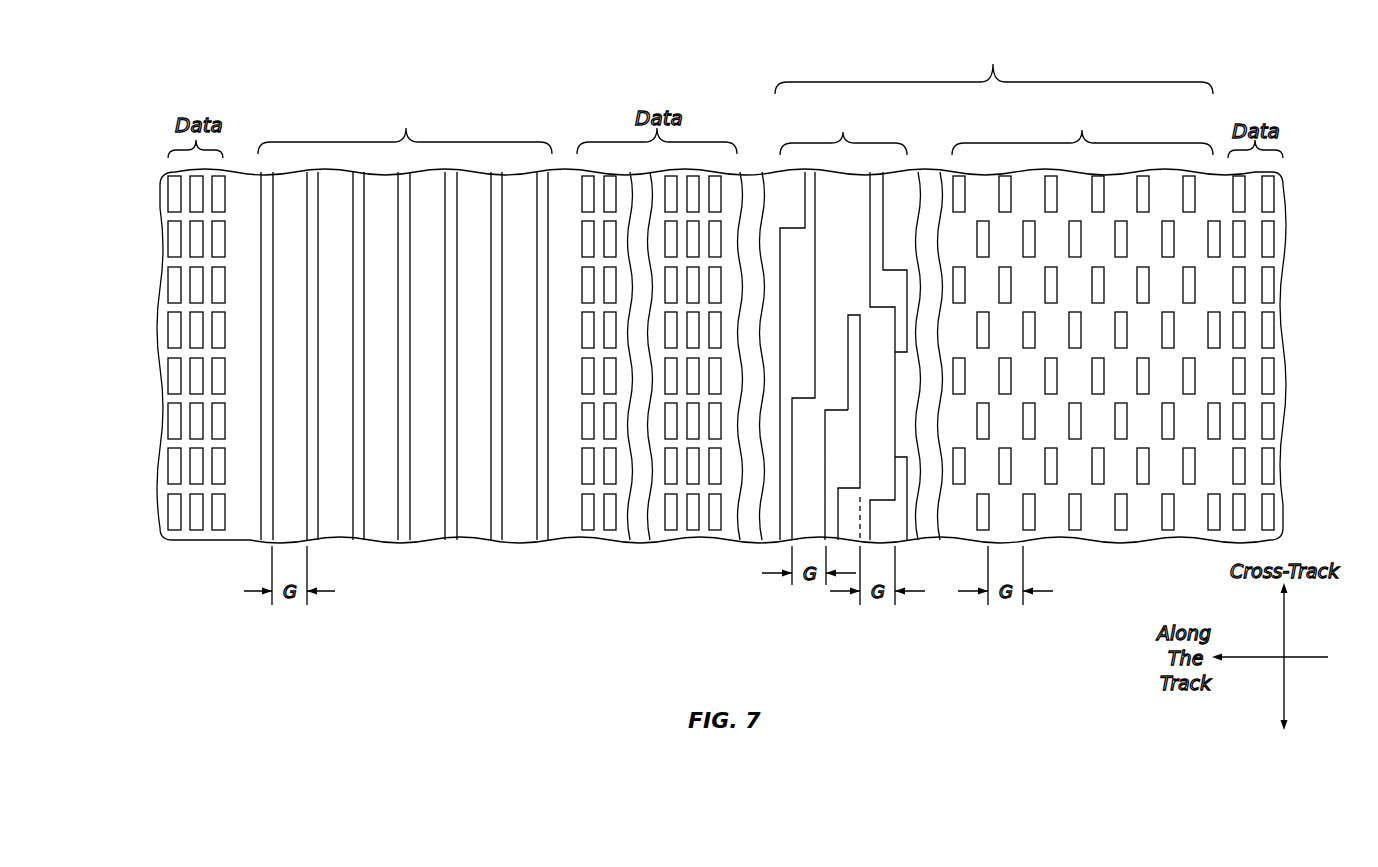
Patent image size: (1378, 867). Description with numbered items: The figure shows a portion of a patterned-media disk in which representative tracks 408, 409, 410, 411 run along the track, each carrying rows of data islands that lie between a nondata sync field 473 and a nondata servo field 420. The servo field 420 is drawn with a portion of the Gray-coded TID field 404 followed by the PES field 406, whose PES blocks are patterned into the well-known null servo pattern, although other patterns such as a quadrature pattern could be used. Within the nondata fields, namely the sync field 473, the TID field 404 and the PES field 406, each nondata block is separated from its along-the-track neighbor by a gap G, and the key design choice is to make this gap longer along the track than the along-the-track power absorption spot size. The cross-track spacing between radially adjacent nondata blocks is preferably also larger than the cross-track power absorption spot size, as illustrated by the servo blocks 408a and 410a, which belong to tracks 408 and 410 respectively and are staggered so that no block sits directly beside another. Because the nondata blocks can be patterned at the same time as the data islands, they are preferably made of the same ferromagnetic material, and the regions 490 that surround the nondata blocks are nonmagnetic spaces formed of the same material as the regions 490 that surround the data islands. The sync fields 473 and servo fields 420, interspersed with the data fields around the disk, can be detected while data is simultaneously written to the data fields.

The sync field 473 is at (380, 112).
The servo field 420 is at (965, 50).
The TID field 404 is at (862, 118).
The PES field 406 is at (1153, 311).
The track 408 is at (150, 228).
The track 409 is at (150, 274).
The track 410 is at (150, 319).
The track 411 is at (150, 365).
The servo block 408a is at (1122, 236).
The servo block 410a is at (1122, 333).
The regions surrounding the nondata blocks 490 is at (170, 490).